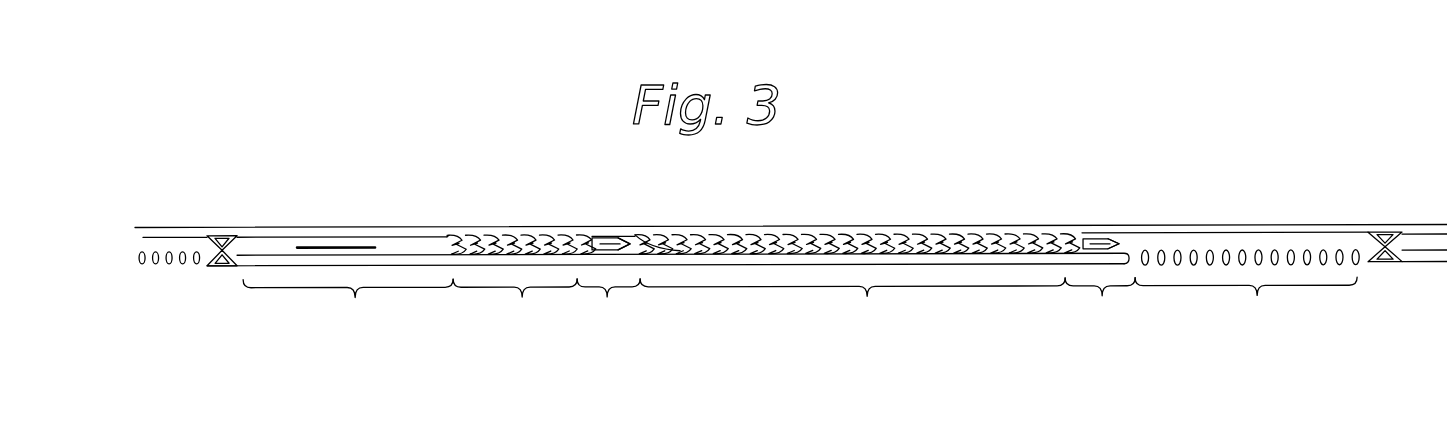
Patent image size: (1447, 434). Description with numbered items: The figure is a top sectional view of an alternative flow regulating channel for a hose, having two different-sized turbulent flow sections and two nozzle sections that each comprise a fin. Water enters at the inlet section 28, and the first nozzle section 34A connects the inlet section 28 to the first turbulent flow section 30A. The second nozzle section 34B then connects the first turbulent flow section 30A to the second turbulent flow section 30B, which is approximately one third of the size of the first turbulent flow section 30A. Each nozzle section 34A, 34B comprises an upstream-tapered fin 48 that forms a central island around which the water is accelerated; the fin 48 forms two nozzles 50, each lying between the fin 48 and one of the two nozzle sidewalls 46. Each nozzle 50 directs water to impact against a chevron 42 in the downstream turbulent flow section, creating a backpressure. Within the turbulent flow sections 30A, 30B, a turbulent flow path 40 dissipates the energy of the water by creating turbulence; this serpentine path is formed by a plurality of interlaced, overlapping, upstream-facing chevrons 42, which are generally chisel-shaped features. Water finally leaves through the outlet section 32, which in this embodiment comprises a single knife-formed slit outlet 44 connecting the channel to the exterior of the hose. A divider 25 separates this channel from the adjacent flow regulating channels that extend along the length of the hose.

The divider 25 is at (232, 238).
The inlet section 28 is at (1291, 283).
The first turbulent flow section 30A is at (852, 307).
The second turbulent flow section 30B is at (515, 306).
The outlet section 32 is at (631, 287).
The first nozzle section 34A is at (1100, 308).
The second nozzle section 34B is at (608, 306).
The turbulent flow path 40 is at (808, 253).
The chevrons 42 is at (763, 236).
The slit outlet 44 is at (332, 246).
The nozzle sidewalls 46 is at (597, 238).
The fin 48 is at (617, 243).
The nozzles 50 is at (622, 240).